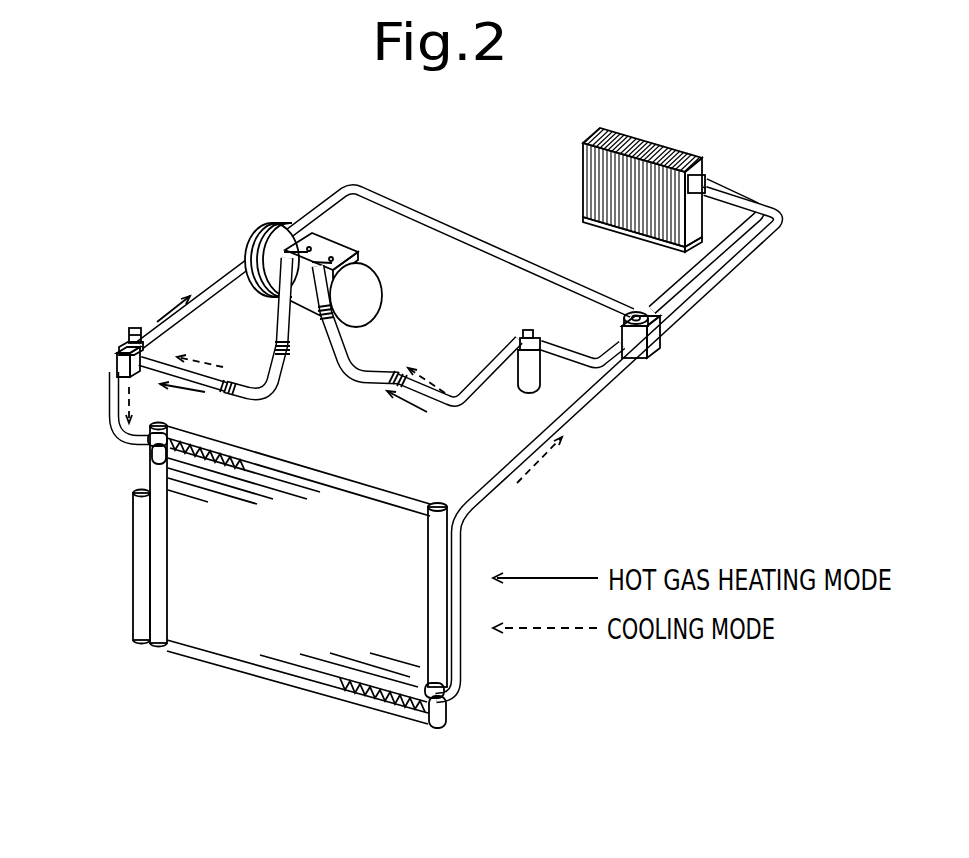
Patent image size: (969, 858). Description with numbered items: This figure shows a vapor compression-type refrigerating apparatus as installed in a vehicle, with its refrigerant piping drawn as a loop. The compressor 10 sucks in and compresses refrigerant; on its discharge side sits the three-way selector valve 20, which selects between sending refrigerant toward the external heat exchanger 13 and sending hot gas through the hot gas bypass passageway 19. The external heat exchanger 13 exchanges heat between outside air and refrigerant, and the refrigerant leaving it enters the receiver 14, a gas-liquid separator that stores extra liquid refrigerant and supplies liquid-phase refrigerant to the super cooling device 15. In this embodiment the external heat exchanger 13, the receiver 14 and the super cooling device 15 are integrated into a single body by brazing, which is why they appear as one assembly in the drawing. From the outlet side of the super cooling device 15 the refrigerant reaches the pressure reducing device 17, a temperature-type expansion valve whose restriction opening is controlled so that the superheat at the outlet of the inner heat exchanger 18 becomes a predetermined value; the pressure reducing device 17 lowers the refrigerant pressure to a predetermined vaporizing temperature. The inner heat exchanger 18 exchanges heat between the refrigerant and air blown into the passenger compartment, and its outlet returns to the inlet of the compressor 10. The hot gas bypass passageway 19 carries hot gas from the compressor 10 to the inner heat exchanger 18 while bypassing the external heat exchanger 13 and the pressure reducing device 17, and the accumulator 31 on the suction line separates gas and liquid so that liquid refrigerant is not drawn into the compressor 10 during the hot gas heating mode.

The compressor 10 is at (363, 292).
The external heat exchanger 13 is at (345, 513).
The receiver 14 is at (135, 552).
The super cooling device 15 is at (240, 635).
The pressure reducing device 17 is at (660, 340).
The inner heat exchanger 18 is at (680, 150).
The hot gas bypass passageway 19 is at (431, 219).
The three-way selector valve 20 is at (116, 362).
The accumulator 31 is at (527, 393).